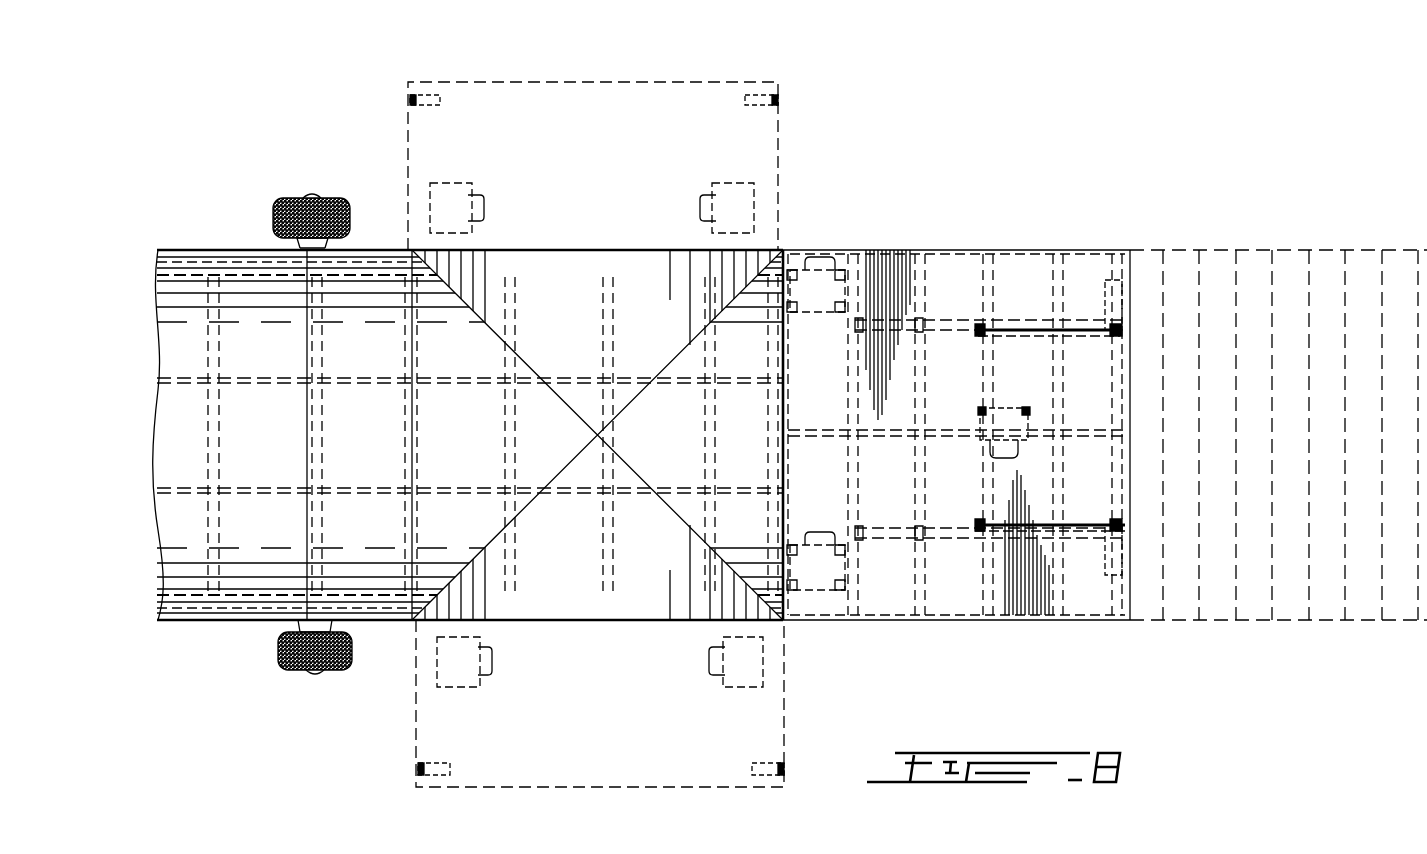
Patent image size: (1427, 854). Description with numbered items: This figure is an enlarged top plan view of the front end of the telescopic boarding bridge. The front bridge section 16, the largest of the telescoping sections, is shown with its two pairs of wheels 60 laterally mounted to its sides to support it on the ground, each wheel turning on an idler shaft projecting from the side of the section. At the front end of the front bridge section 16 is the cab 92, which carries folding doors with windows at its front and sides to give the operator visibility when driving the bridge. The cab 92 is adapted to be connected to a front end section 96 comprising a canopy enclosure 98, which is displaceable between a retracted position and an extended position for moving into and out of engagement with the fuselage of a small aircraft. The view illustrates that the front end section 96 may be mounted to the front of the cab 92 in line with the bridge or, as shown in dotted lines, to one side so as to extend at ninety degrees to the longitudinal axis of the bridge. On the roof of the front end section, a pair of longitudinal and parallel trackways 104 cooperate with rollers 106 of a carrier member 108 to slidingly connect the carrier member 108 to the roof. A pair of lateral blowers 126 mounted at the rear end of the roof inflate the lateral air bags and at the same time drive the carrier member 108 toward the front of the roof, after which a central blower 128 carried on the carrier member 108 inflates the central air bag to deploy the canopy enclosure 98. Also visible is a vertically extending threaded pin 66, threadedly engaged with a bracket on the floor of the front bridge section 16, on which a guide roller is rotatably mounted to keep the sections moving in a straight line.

The front bridge section 16 is at (228, 621).
The wheels 60 is at (281, 205).
The cab 92 is at (578, 556).
The front end section 96 is at (658, 83).
The canopy enclosure 98 is at (1283, 250).
The trackways 104 is at (960, 334).
The rollers 106 is at (979, 326).
The carrier member 108 is at (1020, 326).
The lateral blowers 126 is at (820, 262).
The central blower 128 is at (975, 448).
The threaded pin 66 is at (1052, 618).